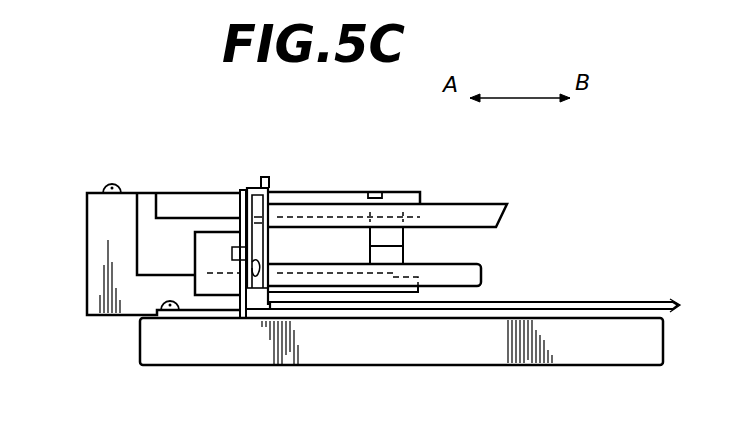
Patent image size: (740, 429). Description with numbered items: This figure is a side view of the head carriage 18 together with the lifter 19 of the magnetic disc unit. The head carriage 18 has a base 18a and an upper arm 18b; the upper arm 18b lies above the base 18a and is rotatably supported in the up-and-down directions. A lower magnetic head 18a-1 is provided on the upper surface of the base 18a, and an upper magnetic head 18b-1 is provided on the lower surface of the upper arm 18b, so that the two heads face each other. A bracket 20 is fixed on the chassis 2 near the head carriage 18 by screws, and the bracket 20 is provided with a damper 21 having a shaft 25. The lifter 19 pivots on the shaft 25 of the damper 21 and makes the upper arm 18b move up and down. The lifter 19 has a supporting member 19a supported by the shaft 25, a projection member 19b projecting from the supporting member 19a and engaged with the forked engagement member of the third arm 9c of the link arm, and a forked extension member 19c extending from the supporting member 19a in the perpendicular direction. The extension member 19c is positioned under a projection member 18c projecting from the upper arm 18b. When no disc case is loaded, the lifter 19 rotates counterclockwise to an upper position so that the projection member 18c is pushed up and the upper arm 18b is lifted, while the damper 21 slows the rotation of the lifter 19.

The chassis 2 is at (340, 352).
The third arm 9c is at (563, 300).
The head carriage 18 is at (78, 231).
The base 18a is at (420, 292).
The lower magnetic head 18a-1 is at (388, 255).
The upper arm 18b is at (420, 197).
The upper magnetic head 18b-1 is at (396, 237).
The projection member 18c is at (100, 254).
The lifter 19 is at (290, 198).
The supporting member 19a is at (240, 250).
The projection member 19b is at (247, 190).
The extension member 19c is at (338, 194).
The bracket 20 is at (233, 210).
The damper 21 is at (207, 232).
The shaft 25 is at (255, 262).